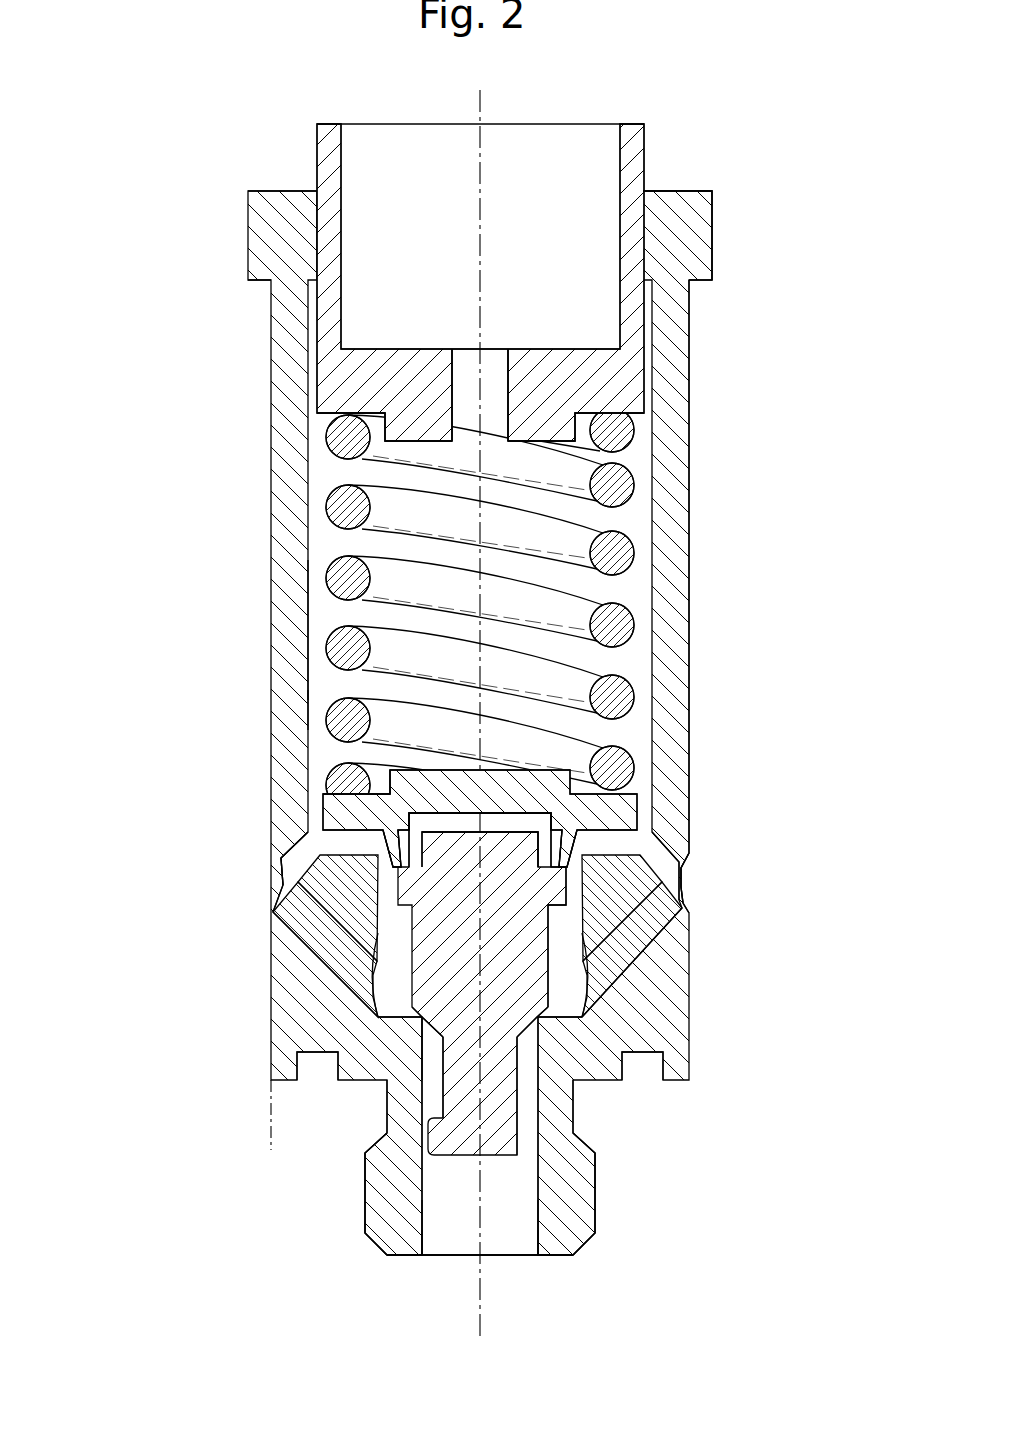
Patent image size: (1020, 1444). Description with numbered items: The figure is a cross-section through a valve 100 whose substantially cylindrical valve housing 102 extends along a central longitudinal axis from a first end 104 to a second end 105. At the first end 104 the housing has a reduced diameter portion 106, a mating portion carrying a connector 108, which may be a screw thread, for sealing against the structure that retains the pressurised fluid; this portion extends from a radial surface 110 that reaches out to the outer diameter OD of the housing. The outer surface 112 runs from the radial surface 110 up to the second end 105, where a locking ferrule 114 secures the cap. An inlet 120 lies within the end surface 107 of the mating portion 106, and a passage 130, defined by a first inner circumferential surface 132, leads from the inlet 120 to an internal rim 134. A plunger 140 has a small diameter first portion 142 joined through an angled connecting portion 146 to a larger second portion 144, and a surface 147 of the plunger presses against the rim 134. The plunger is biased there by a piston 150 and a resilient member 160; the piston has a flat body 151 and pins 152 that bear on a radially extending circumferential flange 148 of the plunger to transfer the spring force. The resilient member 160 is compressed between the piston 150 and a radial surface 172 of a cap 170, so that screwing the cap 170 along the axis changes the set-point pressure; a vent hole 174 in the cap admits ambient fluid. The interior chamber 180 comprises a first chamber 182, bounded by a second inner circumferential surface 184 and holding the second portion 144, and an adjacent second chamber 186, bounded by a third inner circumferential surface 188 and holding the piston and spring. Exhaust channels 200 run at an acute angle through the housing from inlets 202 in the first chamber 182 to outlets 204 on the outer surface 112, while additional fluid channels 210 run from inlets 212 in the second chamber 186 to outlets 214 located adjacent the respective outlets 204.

The valve 100 is at (137, 196).
The valve housing 102 is at (672, 607).
The first end 104 is at (720, 1180).
The second end 105 is at (805, 272).
The reduced diameter portion 106 is at (560, 1222).
The end surface 107 is at (565, 1258).
The connector 108 is at (380, 1210).
The radial surface 110 is at (617, 1083).
The outer surface 112 is at (690, 680).
The locking ferrule 114 is at (695, 205).
The inlet 120 is at (510, 1257).
The passage 130 is at (450, 1225).
The first inner circumferential surface 132 is at (435, 1213).
The internal rim 134 is at (417, 1020).
The plunger 140 is at (353, 978).
The first portion 142 is at (498, 1077).
The second portion 144 is at (523, 942).
The angled connecting portion 146 is at (530, 1020).
The surface 147 is at (423, 1020).
The circumferential flange 148 is at (393, 915).
The piston 150 is at (610, 812).
The body 151 is at (330, 790).
The pins 152 is at (395, 850).
The resilient member 160 is at (630, 540).
The cap 170 is at (630, 352).
The radial surface 172 is at (628, 432).
The vent hole 174 is at (455, 380).
The interior chamber 180 is at (330, 607).
The first chamber 182 is at (380, 948).
The second inner circumferential surface 184 is at (433, 945).
The second chamber 186 is at (322, 660).
The third inner circumferential surface 188 is at (322, 700).
The exhaust channels 200 is at (392, 1021).
The inlet 202 is at (378, 1040).
The outlet 204 is at (285, 880).
The additional fluid channels 210 is at (300, 860).
The inlet 212 is at (680, 873).
The outlet 214 is at (690, 893).
The outer diameter OD is at (268, 1130).